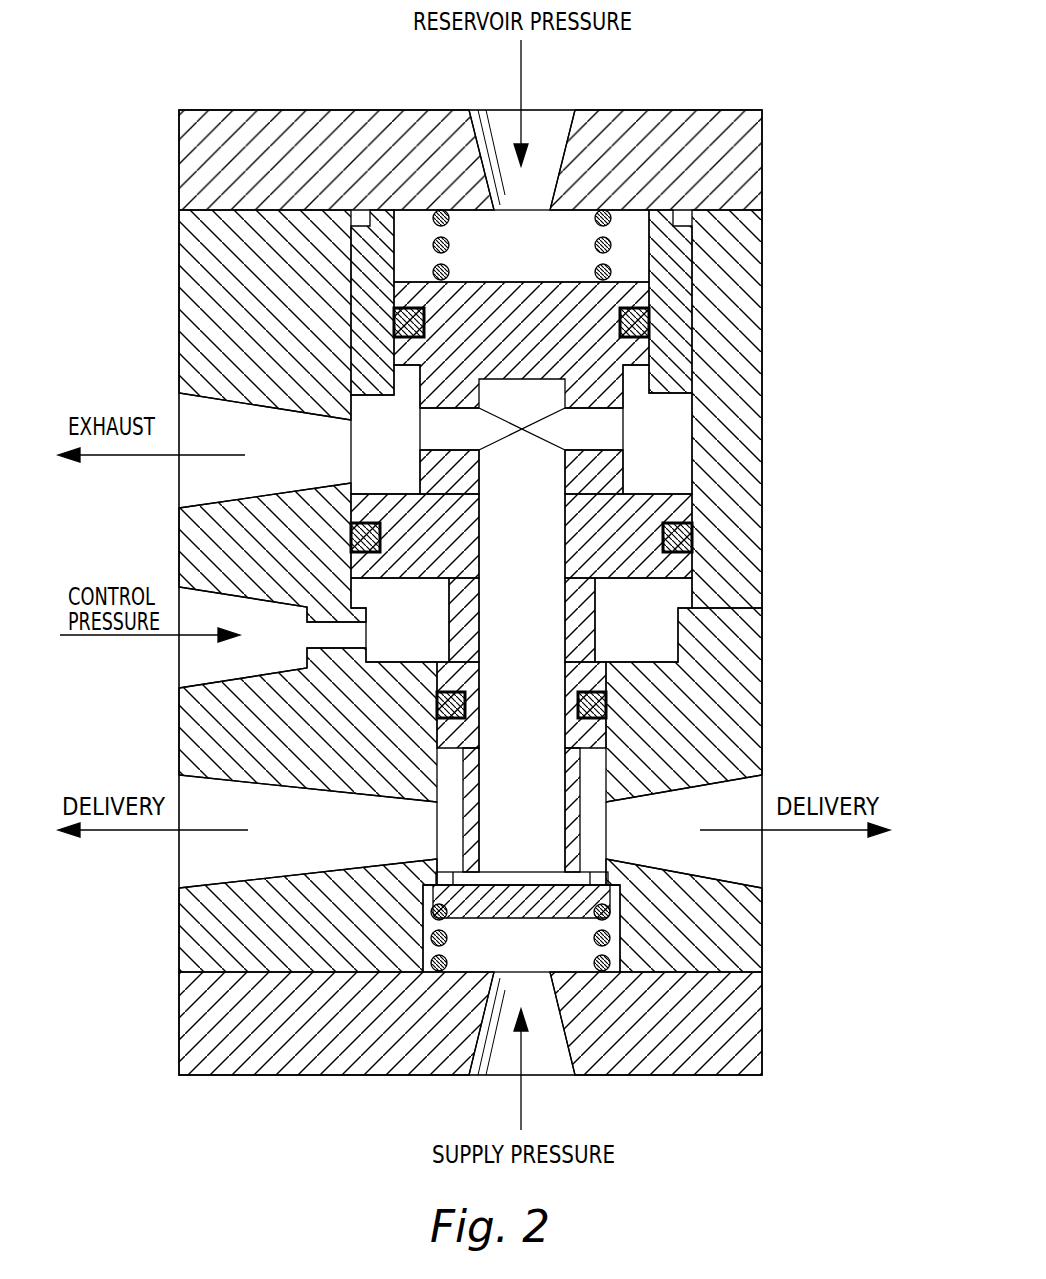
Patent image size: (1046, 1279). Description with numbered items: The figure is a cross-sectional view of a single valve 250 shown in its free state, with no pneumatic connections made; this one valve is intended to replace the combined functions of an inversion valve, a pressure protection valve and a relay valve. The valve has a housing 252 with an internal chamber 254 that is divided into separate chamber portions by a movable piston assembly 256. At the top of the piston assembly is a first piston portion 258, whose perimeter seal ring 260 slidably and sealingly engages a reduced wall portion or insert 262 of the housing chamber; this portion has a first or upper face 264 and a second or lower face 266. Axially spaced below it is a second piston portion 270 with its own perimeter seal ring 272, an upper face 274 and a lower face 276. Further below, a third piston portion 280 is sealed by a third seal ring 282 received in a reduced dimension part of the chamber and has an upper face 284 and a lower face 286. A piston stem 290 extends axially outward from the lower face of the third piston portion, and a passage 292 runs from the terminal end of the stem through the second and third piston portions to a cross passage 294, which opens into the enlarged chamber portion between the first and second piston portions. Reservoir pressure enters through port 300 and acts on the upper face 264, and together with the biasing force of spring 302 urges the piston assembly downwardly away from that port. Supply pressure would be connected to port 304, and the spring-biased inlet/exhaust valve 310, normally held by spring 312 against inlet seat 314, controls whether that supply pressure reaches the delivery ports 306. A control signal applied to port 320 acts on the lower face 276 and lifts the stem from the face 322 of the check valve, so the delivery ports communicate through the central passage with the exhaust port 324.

The valve 250 is at (267, 83).
The housing 252 is at (745, 279).
The internal chamber 254 is at (677, 645).
The piston assembly 256 is at (795, 441).
The first piston portion 258 is at (642, 292).
The seal ring 260 is at (643, 317).
The insert 262 is at (652, 240).
The first face 264 is at (500, 280).
The second face 266 is at (628, 367).
The second piston portion 270 is at (680, 568).
The seal ring 272 is at (688, 532).
The first face 274 is at (392, 487).
The second face 276 is at (403, 578).
The third piston portion 280 is at (605, 745).
The seal ring 282 is at (607, 713).
The first face 284 is at (603, 660).
The second face 286 is at (446, 748).
The piston stem 290 is at (582, 808).
The passage 292 is at (542, 662).
The cross passage 294 is at (595, 432).
The port 300 is at (568, 141).
The spring 302 is at (465, 213).
The port 304 is at (547, 1048).
The delivery ports 306 is at (222, 887).
The inlet/exhaust valve 310 is at (498, 917).
The spring 312 is at (608, 960).
The inlet seat 314 is at (433, 885).
The port 320 is at (222, 690).
The face 322 is at (453, 885).
The exhaust port 324 is at (222, 500).